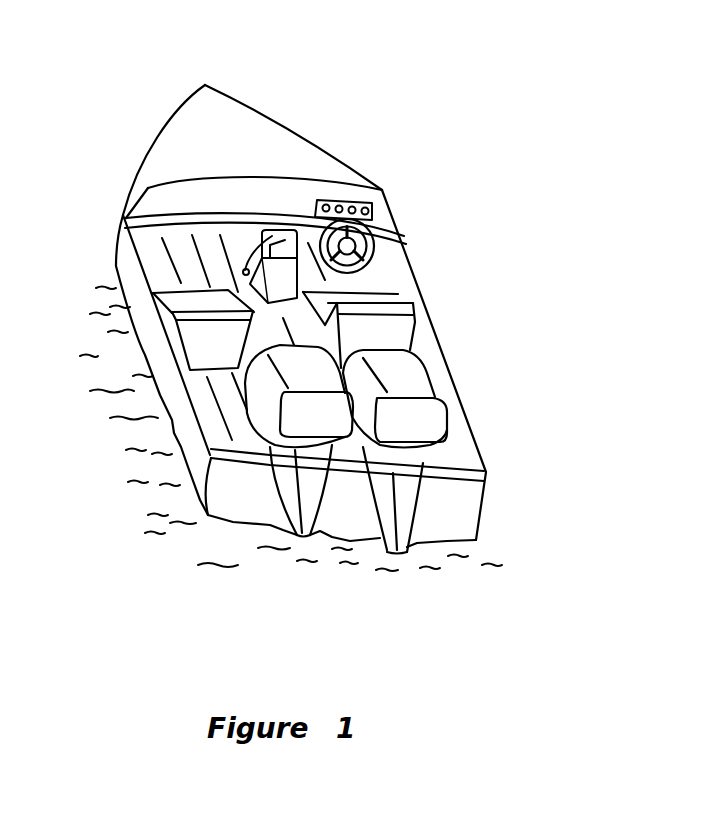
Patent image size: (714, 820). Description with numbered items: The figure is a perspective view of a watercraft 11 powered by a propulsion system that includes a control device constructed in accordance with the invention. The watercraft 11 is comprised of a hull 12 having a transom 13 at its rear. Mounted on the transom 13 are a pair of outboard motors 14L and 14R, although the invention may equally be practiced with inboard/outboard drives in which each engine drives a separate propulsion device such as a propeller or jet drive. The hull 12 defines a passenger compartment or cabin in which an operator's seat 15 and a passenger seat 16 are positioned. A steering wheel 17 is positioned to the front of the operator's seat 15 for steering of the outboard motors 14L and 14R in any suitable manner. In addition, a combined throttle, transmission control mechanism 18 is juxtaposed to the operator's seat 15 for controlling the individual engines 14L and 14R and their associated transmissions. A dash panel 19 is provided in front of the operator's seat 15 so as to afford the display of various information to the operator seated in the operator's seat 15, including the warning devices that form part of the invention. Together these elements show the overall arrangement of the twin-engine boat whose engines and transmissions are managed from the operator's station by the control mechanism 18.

The watercraft 11 is at (326, 126).
The hull 12 is at (162, 359).
The transom 13 is at (340, 527).
The outboard motor 14L is at (310, 508).
The outboard motor 14R is at (403, 512).
The operator's seat 15 is at (387, 293).
The passenger seat 16 is at (160, 303).
The steering wheel 17 is at (375, 249).
The combined throttle, transmission control mechanism 18 is at (260, 238).
The dash panel 19 is at (355, 203).